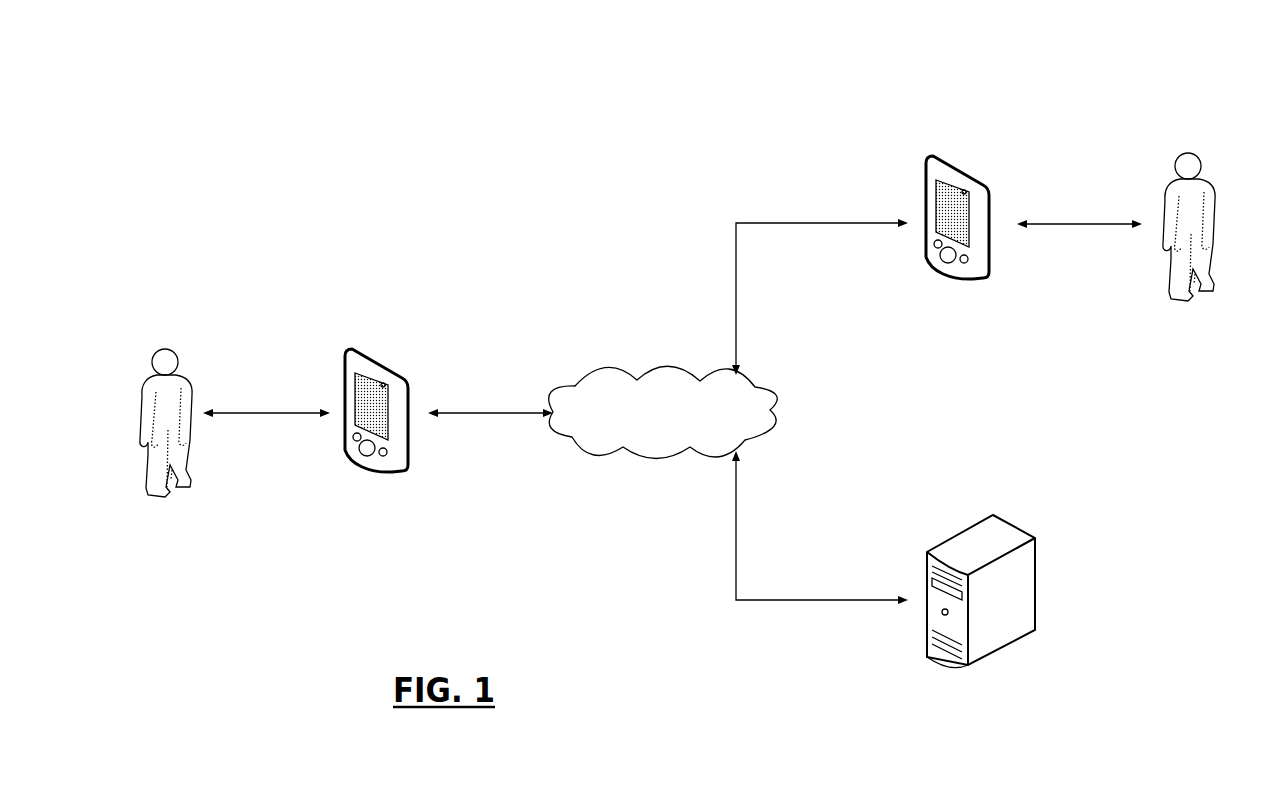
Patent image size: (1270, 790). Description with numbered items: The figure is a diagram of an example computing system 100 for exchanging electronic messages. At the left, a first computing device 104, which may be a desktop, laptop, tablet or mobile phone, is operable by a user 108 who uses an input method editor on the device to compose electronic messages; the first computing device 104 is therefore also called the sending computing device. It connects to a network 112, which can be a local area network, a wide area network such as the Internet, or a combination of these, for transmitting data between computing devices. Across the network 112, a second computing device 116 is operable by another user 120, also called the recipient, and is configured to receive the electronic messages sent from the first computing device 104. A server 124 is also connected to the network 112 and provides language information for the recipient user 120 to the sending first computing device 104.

The computing system 100 is at (209, 66).
The first computing device 104 is at (388, 358).
The user 108 is at (167, 346).
The network 112 is at (665, 367).
The second computing device 116 is at (970, 165).
The user 120 is at (1190, 152).
The server 124 is at (1015, 525).